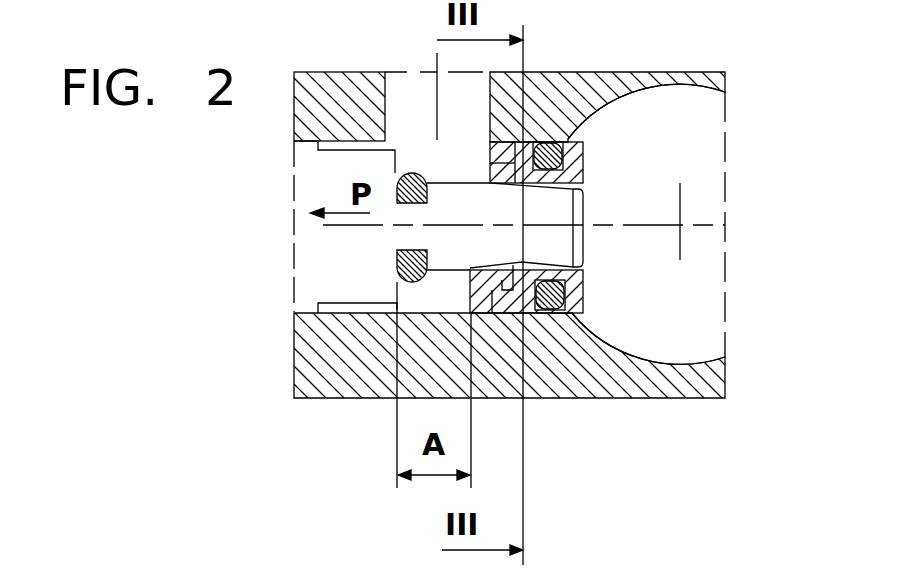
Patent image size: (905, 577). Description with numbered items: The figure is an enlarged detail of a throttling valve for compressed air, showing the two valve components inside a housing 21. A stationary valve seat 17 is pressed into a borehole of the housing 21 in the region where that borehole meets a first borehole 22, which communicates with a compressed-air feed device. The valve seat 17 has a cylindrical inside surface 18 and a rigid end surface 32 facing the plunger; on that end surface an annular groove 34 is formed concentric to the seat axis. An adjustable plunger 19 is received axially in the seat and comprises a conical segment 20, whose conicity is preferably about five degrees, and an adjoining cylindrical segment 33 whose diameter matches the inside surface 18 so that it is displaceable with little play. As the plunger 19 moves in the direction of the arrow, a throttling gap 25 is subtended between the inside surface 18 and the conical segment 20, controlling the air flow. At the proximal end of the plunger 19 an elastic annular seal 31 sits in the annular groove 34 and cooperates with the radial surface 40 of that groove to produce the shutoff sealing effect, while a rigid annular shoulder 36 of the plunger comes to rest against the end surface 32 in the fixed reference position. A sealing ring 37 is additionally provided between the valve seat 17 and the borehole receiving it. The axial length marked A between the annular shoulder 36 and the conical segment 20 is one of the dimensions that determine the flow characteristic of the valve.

The valve seat 17 is at (578, 294).
The cylindrical inside surface 18 is at (592, 192).
The plunger 19 is at (315, 180).
The conical segment 20 is at (585, 213).
The housing 21 is at (318, 348).
The first borehole 22 is at (703, 292).
The throttling gap 25 is at (521, 266).
The annular seal 31 is at (397, 263).
The end surface 32 is at (488, 155).
The cylindrical segment 33 is at (457, 270).
The annular groove 34 is at (470, 282).
The annular shoulder 36 is at (410, 172).
The sealing ring 37 is at (585, 153).
The radial surface 40 is at (507, 187).